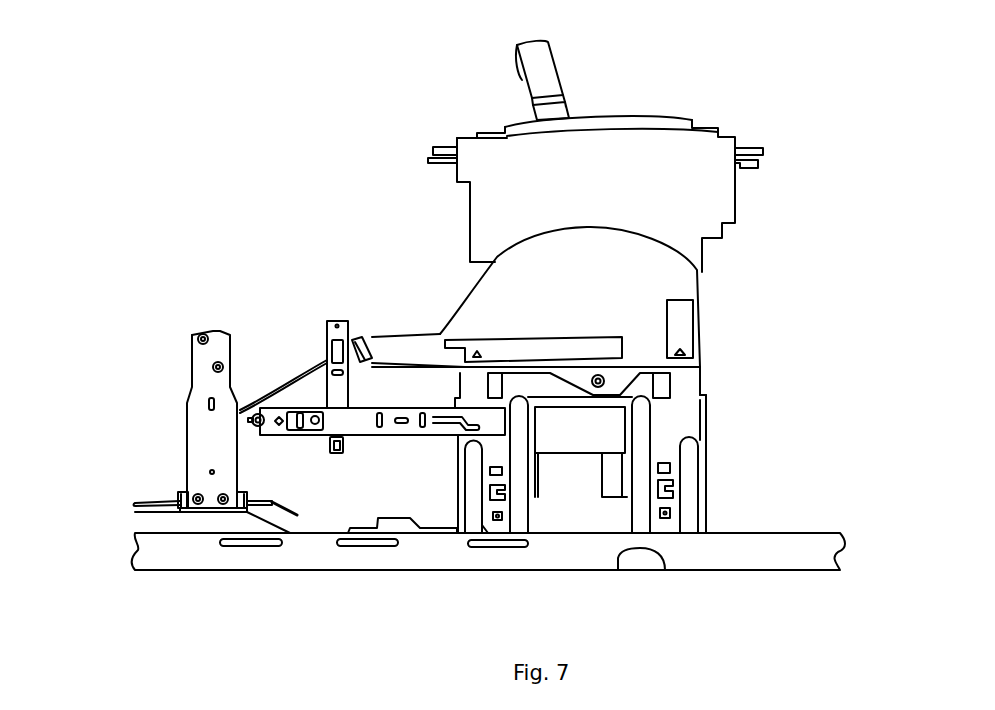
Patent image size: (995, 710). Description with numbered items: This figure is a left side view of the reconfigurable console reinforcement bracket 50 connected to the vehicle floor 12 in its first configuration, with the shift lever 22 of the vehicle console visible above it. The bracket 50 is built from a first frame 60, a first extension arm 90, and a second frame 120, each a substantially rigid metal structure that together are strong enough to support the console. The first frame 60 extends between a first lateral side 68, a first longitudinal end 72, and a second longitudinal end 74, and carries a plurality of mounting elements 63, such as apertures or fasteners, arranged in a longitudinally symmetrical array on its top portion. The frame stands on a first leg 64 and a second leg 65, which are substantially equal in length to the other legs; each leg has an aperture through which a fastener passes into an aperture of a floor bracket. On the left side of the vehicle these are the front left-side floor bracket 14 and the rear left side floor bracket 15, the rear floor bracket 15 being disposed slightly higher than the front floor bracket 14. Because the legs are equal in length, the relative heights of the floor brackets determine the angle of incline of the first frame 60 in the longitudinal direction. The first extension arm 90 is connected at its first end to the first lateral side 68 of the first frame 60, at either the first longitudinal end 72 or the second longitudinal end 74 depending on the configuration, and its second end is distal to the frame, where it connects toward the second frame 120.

The vehicle floor 12 is at (825, 533).
The front left-side floor bracket 14 is at (537, 520).
The rear left side floor bracket 15 is at (707, 513).
The shift lever 22 is at (562, 68).
The bracket 50 is at (296, 330).
The first frame 60 is at (707, 455).
The mounting elements 63 is at (458, 393).
The first leg 64 is at (465, 445).
The second leg 65 is at (697, 477).
The first lateral side 68 is at (698, 423).
The first longitudinal end 72 is at (452, 488).
The second longitudinal end 74 is at (707, 408).
The first extension arm 90 is at (370, 437).
The second frame 120 is at (342, 320).